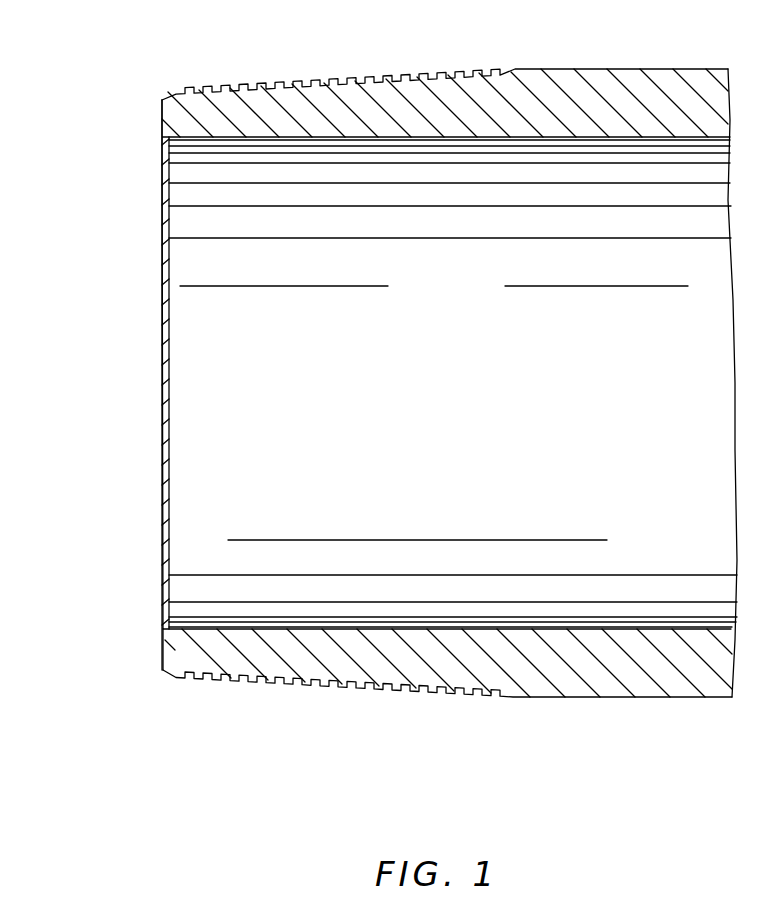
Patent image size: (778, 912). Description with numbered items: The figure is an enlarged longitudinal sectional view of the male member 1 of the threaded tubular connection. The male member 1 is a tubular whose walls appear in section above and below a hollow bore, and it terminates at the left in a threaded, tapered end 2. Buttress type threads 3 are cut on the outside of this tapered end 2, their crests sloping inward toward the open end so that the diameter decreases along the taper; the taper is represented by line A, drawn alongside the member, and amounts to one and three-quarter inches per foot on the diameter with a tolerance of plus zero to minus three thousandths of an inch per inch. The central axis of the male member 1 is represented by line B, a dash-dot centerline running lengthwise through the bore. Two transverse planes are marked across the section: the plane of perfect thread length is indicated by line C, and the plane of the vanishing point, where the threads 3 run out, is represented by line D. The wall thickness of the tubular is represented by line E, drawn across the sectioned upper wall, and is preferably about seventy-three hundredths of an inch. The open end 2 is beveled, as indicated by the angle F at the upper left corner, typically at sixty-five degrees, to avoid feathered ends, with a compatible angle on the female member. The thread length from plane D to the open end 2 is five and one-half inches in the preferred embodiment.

The male member 1 is at (578, 697).
The threaded, tapered end 2 is at (162, 487).
The buttress type threads 3 is at (378, 79).
The taper line A is at (47, 672).
The central axis B is at (169, 383).
The plane of perfect thread length C is at (450, 629).
The plane of the vanishing point D is at (528, 15).
The wall thickness E is at (570, 69).
The bevel angle F is at (162, 13).